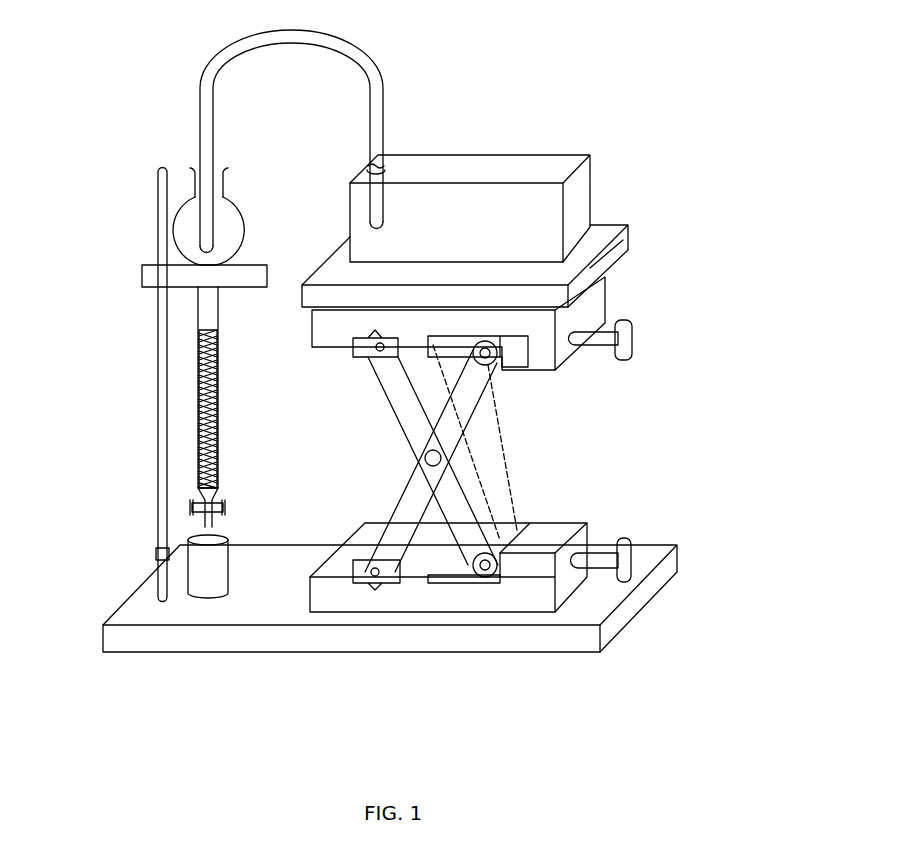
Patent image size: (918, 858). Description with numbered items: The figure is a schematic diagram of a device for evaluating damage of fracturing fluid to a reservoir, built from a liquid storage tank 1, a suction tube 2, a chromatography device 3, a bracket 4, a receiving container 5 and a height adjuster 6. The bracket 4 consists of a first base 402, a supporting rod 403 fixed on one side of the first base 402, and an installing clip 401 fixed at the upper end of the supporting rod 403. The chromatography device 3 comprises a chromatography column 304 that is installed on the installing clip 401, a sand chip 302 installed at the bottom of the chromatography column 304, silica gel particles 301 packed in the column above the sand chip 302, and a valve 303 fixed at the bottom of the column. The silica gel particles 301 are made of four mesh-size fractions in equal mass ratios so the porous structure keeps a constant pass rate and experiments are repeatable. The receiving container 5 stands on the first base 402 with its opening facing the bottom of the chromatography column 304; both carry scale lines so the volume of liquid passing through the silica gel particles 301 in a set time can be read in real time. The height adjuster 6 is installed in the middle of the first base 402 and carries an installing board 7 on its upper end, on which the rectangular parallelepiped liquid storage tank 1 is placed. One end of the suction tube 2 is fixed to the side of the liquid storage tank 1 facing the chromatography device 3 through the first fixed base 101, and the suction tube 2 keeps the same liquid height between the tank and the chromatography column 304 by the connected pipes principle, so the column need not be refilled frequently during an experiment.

The liquid storage tank 1 is at (510, 167).
The first fixed base 101 is at (383, 168).
The suction tube 2 is at (207, 115).
The chromatography device 3 is at (178, 203).
The bracket 4 is at (162, 400).
The installing clip 401 is at (183, 277).
The first base 402 is at (208, 635).
The supporting rod 403 is at (160, 553).
The receiving container 5 is at (188, 573).
The height adjuster 6 is at (480, 470).
The installing board 7 is at (628, 243).
The silica gel particles 301 is at (198, 368).
The sand chip 302 is at (197, 483).
The valve 303 is at (190, 505).
The chromatography column 304 is at (218, 313).